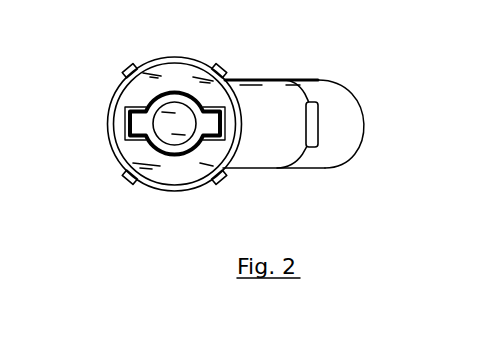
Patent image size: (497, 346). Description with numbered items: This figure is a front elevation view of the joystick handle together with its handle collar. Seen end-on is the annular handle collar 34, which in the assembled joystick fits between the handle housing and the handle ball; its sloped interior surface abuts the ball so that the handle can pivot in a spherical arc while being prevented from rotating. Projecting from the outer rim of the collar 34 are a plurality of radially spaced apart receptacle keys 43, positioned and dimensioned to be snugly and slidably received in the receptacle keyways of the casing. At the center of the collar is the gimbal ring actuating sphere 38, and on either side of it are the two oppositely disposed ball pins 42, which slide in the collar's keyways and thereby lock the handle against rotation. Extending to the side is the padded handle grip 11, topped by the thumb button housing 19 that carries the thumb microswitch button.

The padded handle grip 11 is at (272, 95).
The thumb button housing 19 is at (330, 92).
The handle collar 34 is at (205, 63).
The gimbal ring actuating sphere 38 is at (172, 101).
The ball pins 42 is at (140, 120).
The receptacle keys 43 is at (128, 183).